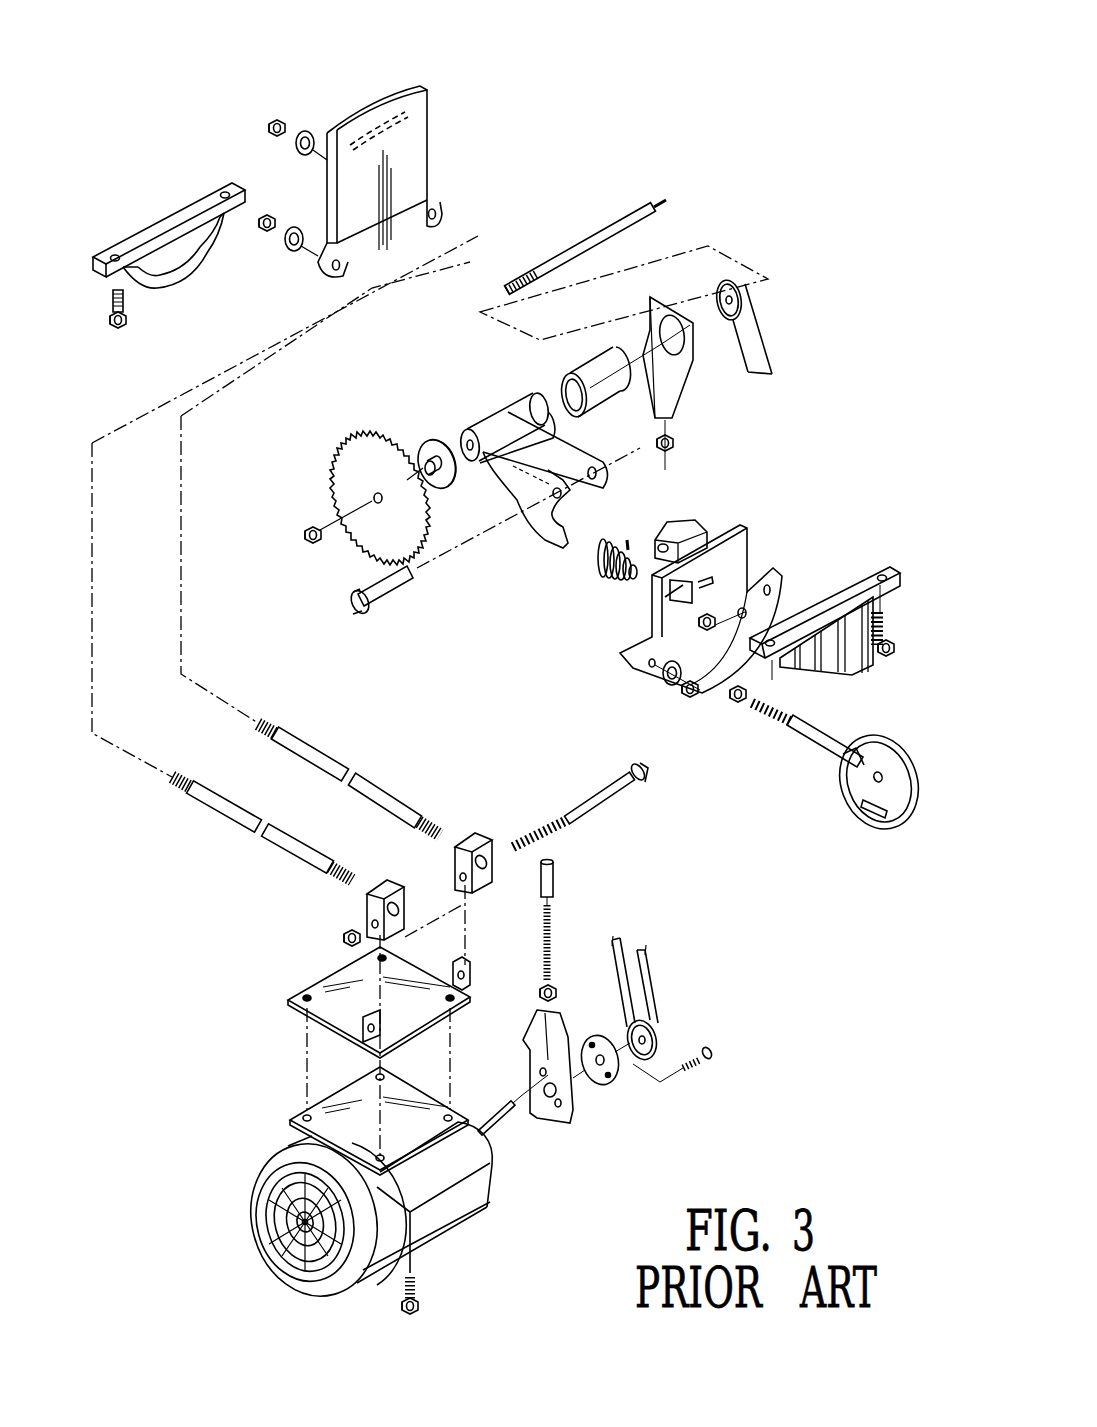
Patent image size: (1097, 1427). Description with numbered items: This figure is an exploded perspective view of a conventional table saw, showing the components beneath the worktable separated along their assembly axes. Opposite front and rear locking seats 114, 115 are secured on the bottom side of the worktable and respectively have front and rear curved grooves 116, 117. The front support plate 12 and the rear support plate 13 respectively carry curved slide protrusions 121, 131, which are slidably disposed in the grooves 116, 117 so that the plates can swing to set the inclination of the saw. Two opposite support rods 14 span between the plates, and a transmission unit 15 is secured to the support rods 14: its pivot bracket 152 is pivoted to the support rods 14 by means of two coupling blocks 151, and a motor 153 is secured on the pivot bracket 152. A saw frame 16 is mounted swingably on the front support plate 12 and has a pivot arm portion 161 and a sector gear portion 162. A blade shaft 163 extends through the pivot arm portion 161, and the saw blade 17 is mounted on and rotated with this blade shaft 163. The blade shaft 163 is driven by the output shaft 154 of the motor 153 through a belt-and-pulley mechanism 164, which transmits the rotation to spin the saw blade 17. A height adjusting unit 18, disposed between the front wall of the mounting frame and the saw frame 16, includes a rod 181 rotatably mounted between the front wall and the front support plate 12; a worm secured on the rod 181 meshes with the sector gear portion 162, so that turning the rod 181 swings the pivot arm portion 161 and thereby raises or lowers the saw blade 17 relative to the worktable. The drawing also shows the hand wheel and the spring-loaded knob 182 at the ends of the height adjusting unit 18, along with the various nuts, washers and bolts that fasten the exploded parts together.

The front support plate 12 is at (745, 530).
The curved slide protrusion 121 is at (702, 566).
The rear support plate 13 is at (405, 88).
The curved slide protrusion 131 is at (366, 130).
The support rods 14 is at (308, 740).
The transmission unit 15 is at (460, 1228).
The coupling blocks 151 is at (478, 832).
The pivot bracket 152 is at (292, 1003).
The motor 153 is at (300, 1148).
The output shaft 154 is at (508, 1115).
The saw frame 16 is at (490, 412).
The pivot arm portion 161 is at (475, 462).
The sector gear portion 162 is at (525, 520).
The blade shaft 163 is at (582, 245).
The belt-and-pulley mechanism 164 is at (655, 1000).
The saw blade 17 is at (358, 445).
The height adjusting unit 18 is at (858, 826).
The rod 181 is at (762, 722).
The adjusting spring knob 182 is at (603, 590).
The front locking seat 114 is at (905, 573).
The rear locking seat 115 is at (117, 250).
The front curved groove 116 is at (832, 612).
The rear curved groove 117 is at (158, 265).